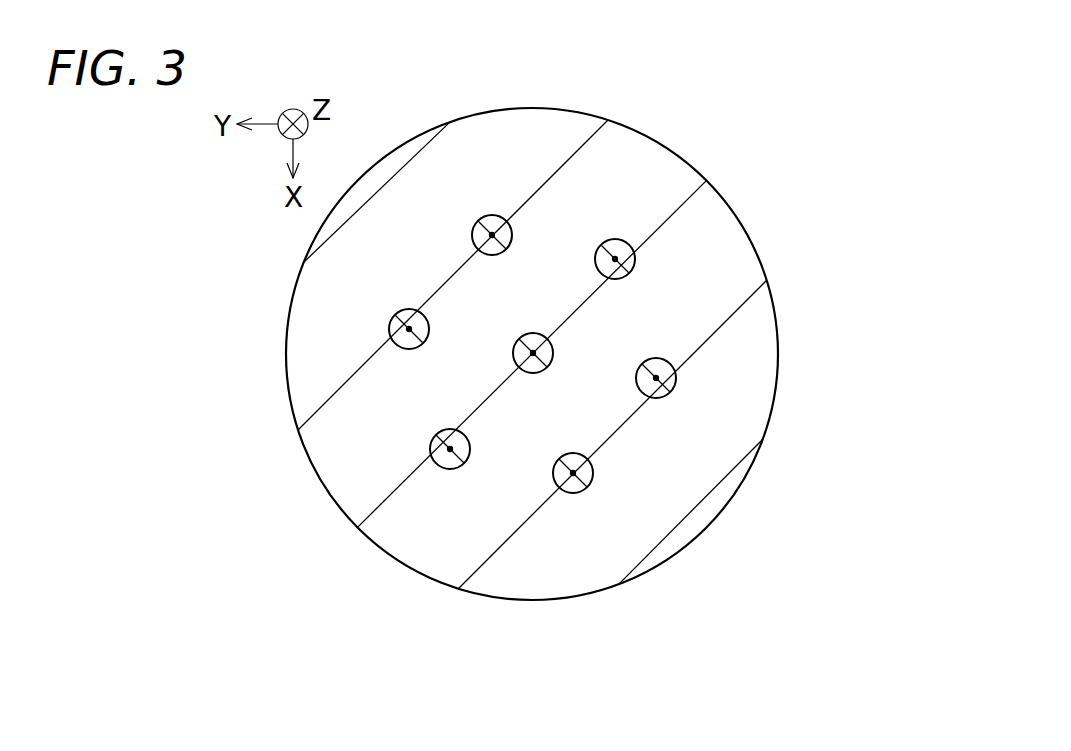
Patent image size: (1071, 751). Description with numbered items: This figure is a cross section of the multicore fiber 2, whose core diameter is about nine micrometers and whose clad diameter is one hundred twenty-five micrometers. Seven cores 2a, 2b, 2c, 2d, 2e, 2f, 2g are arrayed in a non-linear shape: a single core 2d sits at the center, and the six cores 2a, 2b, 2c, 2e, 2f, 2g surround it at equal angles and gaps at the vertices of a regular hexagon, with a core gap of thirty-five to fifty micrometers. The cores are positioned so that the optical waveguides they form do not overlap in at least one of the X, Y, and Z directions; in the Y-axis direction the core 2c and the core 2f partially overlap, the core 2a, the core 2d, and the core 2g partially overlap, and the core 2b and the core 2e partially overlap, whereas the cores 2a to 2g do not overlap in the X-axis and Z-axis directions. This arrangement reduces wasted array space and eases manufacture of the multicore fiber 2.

The multicore fiber 2 is at (400, 122).
The core 2a is at (409, 329).
The core 2b is at (450, 449).
The core 2c is at (492, 235).
The core 2d is at (533, 353).
The core 2e is at (573, 473).
The core 2f is at (615, 259).
The core 2g is at (656, 378).